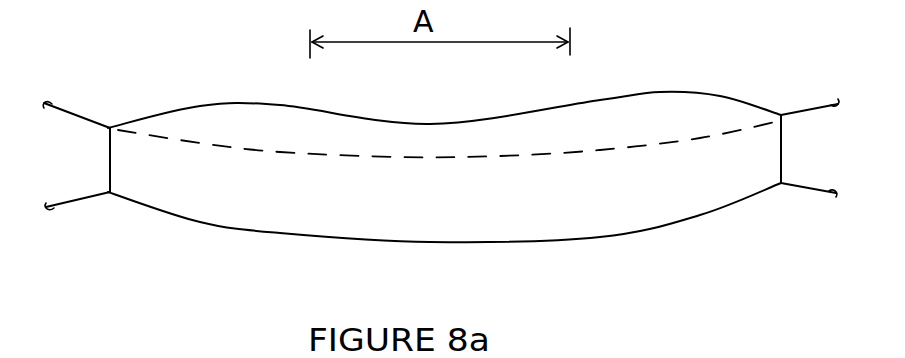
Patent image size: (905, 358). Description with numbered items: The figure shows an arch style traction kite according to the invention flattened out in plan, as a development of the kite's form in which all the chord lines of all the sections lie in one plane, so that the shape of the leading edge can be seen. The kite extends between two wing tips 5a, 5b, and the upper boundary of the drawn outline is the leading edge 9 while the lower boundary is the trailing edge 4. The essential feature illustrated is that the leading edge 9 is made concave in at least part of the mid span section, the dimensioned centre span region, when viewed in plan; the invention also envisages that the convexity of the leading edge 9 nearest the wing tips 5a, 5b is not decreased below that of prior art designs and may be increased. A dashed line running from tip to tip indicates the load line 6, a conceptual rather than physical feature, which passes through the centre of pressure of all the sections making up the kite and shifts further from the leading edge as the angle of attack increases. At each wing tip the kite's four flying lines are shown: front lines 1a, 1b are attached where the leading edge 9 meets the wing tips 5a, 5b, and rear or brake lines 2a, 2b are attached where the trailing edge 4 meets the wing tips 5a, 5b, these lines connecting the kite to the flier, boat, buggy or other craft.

The front line 1a is at (73, 108).
The rear or brake line 2a is at (70, 203).
The wing tip 5a is at (110, 162).
The front line 1b is at (802, 108).
The rear or brake line 2b is at (810, 192).
The wing tip 5b is at (782, 147).
The leading edge 9 is at (427, 123).
The load line 6 is at (403, 157).
The trailing edge 4 is at (430, 243).